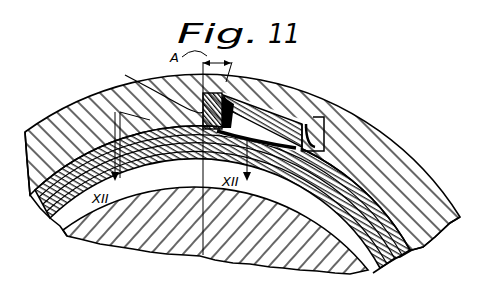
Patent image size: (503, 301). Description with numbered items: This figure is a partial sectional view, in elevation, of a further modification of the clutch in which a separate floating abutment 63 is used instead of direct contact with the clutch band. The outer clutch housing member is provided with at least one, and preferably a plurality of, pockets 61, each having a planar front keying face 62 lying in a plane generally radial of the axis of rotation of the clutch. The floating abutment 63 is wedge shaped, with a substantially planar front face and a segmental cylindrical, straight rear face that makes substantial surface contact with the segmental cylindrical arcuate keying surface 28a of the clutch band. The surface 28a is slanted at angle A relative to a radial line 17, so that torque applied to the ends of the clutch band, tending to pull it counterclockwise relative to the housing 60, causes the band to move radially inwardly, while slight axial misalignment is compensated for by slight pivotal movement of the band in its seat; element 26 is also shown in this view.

The housing 60 is at (72, 118).
The pocket 61 is at (263, 101).
The planar front keying face 62 is at (151, 124).
The floating abutment 63 is at (203, 93).
The retaining bracket 26 is at (303, 124).
The radial line 17 is at (203, 181).
The arcuate keying surface 28a is at (249, 162).